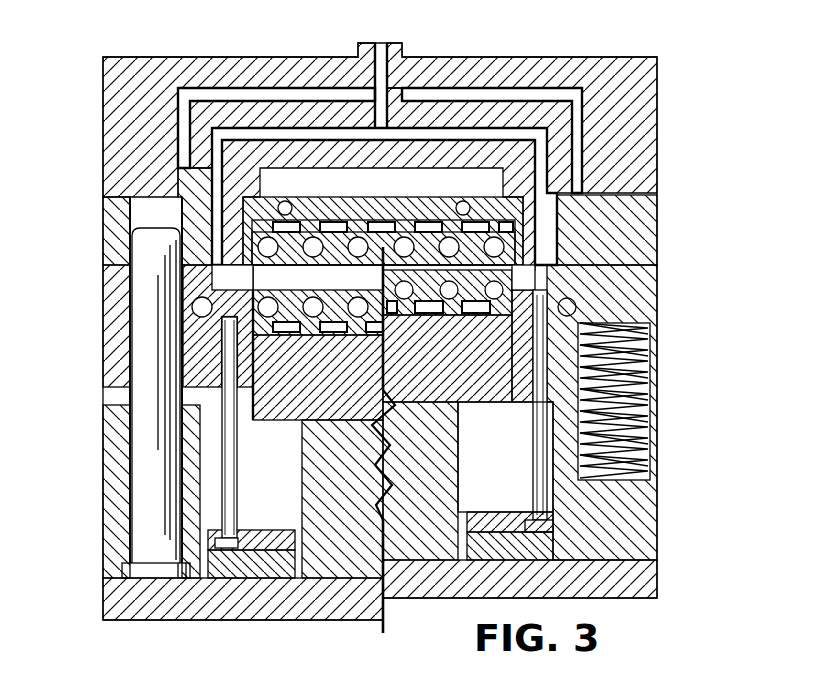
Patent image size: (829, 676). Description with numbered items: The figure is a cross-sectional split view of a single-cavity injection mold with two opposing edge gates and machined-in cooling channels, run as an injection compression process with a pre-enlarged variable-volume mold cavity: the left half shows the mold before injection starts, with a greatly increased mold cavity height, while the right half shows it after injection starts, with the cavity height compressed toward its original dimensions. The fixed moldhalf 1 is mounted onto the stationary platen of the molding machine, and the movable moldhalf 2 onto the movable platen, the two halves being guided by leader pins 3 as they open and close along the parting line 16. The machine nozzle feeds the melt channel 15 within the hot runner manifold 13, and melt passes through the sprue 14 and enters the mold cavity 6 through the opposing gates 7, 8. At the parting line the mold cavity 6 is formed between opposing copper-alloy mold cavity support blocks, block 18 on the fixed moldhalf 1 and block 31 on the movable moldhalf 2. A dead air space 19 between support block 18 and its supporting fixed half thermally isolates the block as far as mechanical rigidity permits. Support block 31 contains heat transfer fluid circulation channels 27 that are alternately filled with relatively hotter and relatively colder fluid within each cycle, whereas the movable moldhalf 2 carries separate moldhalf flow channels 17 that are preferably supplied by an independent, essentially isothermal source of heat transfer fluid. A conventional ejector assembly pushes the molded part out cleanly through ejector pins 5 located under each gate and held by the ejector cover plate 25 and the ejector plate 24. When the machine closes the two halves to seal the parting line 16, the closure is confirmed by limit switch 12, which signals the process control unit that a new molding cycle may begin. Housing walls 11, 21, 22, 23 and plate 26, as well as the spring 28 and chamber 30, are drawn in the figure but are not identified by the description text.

The fixed moldhalf 1 is at (697, 77).
The movable moldhalf 2 is at (694, 476).
The leader pins 3 is at (133, 462).
The ejector pins 5 is at (230, 468).
The mold cavity 6 is at (510, 252).
The gate 7 is at (235, 277).
The gate 8 is at (533, 277).
The housing 11 is at (113, 110).
The limit switch 12 is at (625, 207).
The hot runner manifold 13 is at (235, 110).
The sprue 14 is at (203, 178).
The melt channel 15 is at (503, 137).
The parting line 16 is at (560, 300).
The moldhalf flow channels 17 is at (286, 203).
The mold cavity support block 18 is at (477, 137).
The dead air space 19 is at (330, 226).
The housing wall section 21 is at (110, 346).
The housing wall section 22 is at (113, 505).
The support block 23 is at (333, 553).
The ejector plate 24 is at (263, 568).
The ejector cover plate 25 is at (250, 540).
The bottom plate 26 is at (625, 585).
The heat transfer fluid circulation channels 27 is at (283, 340).
The compression spring 28 is at (625, 440).
The chamber 30 is at (463, 403).
The mold cavity support block 31 is at (456, 378).